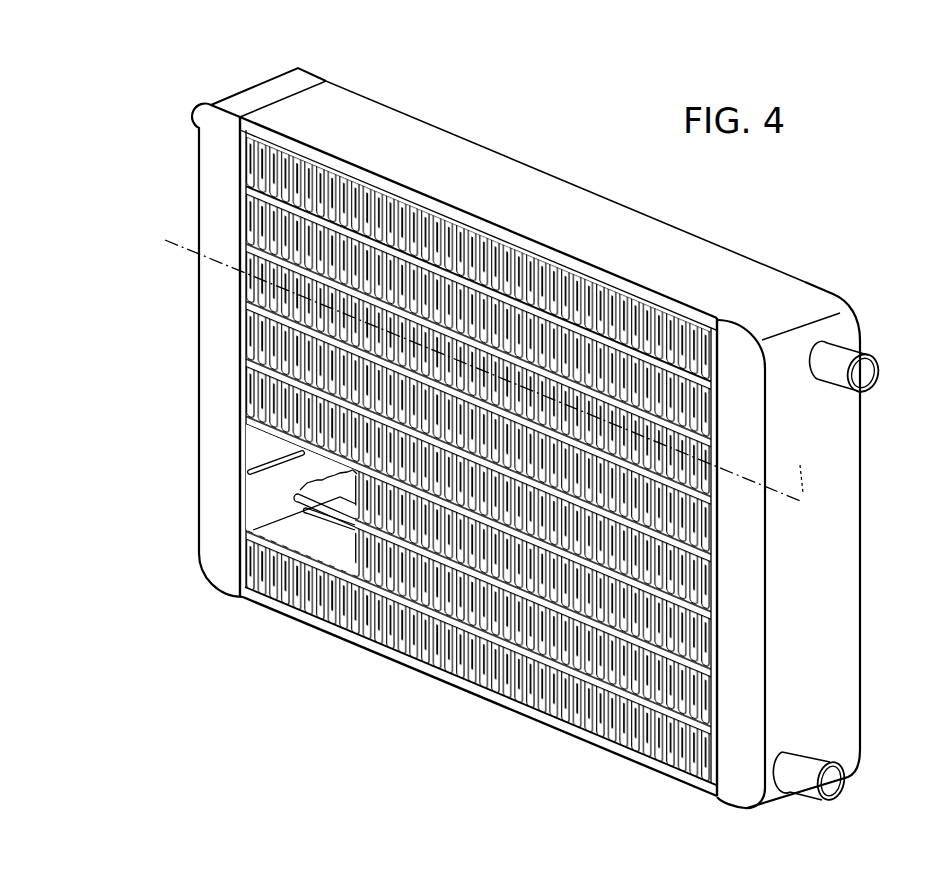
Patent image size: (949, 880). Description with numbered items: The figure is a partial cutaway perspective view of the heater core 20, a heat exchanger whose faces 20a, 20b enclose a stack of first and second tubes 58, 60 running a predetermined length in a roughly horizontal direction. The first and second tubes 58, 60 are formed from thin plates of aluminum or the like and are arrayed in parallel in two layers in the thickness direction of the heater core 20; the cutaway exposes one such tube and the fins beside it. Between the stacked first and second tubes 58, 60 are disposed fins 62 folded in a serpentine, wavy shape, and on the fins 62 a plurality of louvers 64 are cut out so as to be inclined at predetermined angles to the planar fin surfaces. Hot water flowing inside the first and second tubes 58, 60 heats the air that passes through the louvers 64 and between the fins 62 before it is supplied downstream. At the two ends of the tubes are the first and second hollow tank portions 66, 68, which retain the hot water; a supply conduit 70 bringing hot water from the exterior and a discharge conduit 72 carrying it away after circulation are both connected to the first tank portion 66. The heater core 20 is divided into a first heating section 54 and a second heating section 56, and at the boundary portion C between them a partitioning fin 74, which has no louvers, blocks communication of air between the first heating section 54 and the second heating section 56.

The heater core 20 is at (700, 203).
The core portion 20a is at (372, 190).
The top plate 20b is at (523, 163).
The first heating section 54 is at (683, 625).
The second heating section 56 is at (620, 357).
The first tube 58 is at (280, 527).
The second tube 60 is at (300, 490).
The fin 62 is at (282, 598).
The louver 64 is at (432, 655).
The first tank portion 66 is at (847, 533).
The second tank portion 68 is at (222, 413).
The supply conduit 70 is at (873, 373).
The discharge conduit 72 is at (847, 788).
The partitioning fin 74 is at (243, 283).
The boundary portion C is at (800, 468).